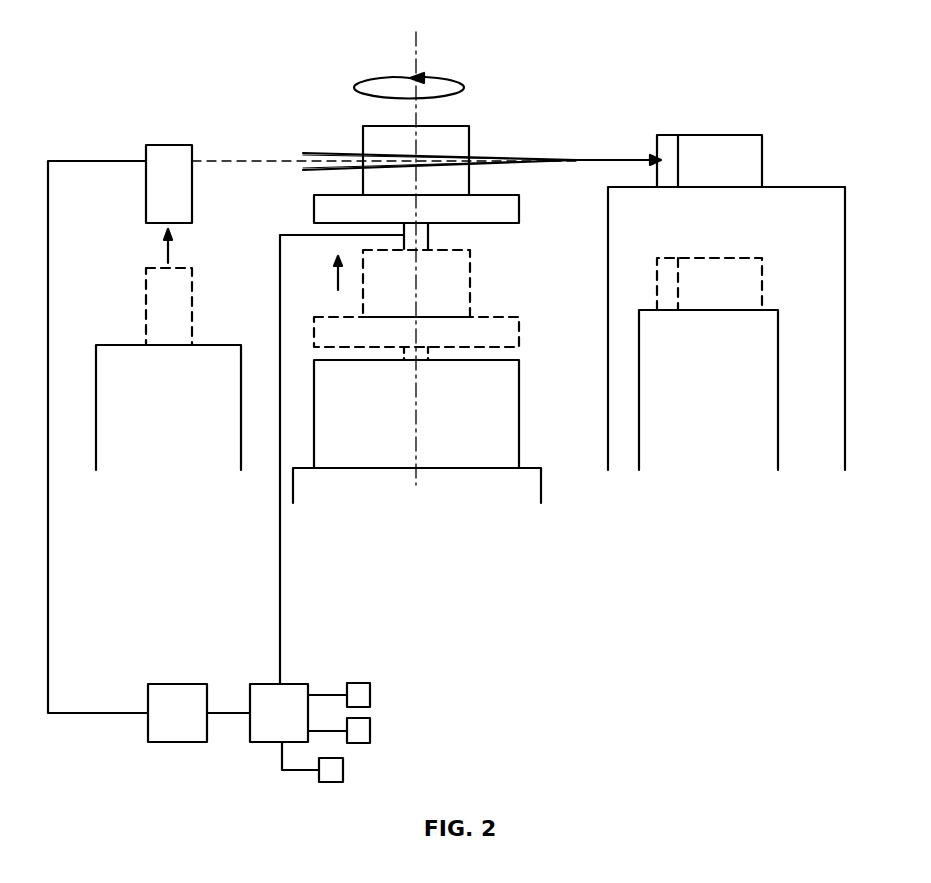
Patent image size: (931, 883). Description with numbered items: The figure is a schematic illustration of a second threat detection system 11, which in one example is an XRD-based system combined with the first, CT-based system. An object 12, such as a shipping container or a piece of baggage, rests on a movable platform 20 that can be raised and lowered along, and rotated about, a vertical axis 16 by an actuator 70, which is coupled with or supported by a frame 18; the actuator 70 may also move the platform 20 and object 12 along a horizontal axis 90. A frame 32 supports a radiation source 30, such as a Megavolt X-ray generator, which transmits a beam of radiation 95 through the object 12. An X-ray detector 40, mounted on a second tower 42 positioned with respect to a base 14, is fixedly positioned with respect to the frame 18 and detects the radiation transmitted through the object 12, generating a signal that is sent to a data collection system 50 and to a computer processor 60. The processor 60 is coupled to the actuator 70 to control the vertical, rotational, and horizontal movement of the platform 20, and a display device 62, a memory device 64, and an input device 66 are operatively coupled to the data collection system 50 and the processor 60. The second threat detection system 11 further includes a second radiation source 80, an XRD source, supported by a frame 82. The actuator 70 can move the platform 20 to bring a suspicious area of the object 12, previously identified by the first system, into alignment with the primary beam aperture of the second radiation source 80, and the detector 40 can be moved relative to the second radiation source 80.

The second threat detection system 11 is at (561, 124).
The object 12 is at (458, 126).
The base 14 is at (541, 490).
The vertical axis 16 is at (416, 47).
The frame 18 is at (519, 418).
The movable platform 20 is at (519, 208).
The radiation source 30 is at (762, 272).
The frame 32 is at (778, 403).
The X-ray detector 40 is at (192, 152).
The second tower 42 is at (96, 423).
The data collection system 50 is at (178, 684).
The computer processor 60 is at (293, 684).
The display device 62 is at (370, 694).
The memory device 64 is at (370, 731).
The input device 66 is at (343, 770).
The actuator 70 is at (428, 233).
The second radiation source 80 is at (708, 135).
The frame 82 is at (792, 187).
The horizontal axis 90 is at (506, 158).
The beam of radiation 95 is at (593, 158).